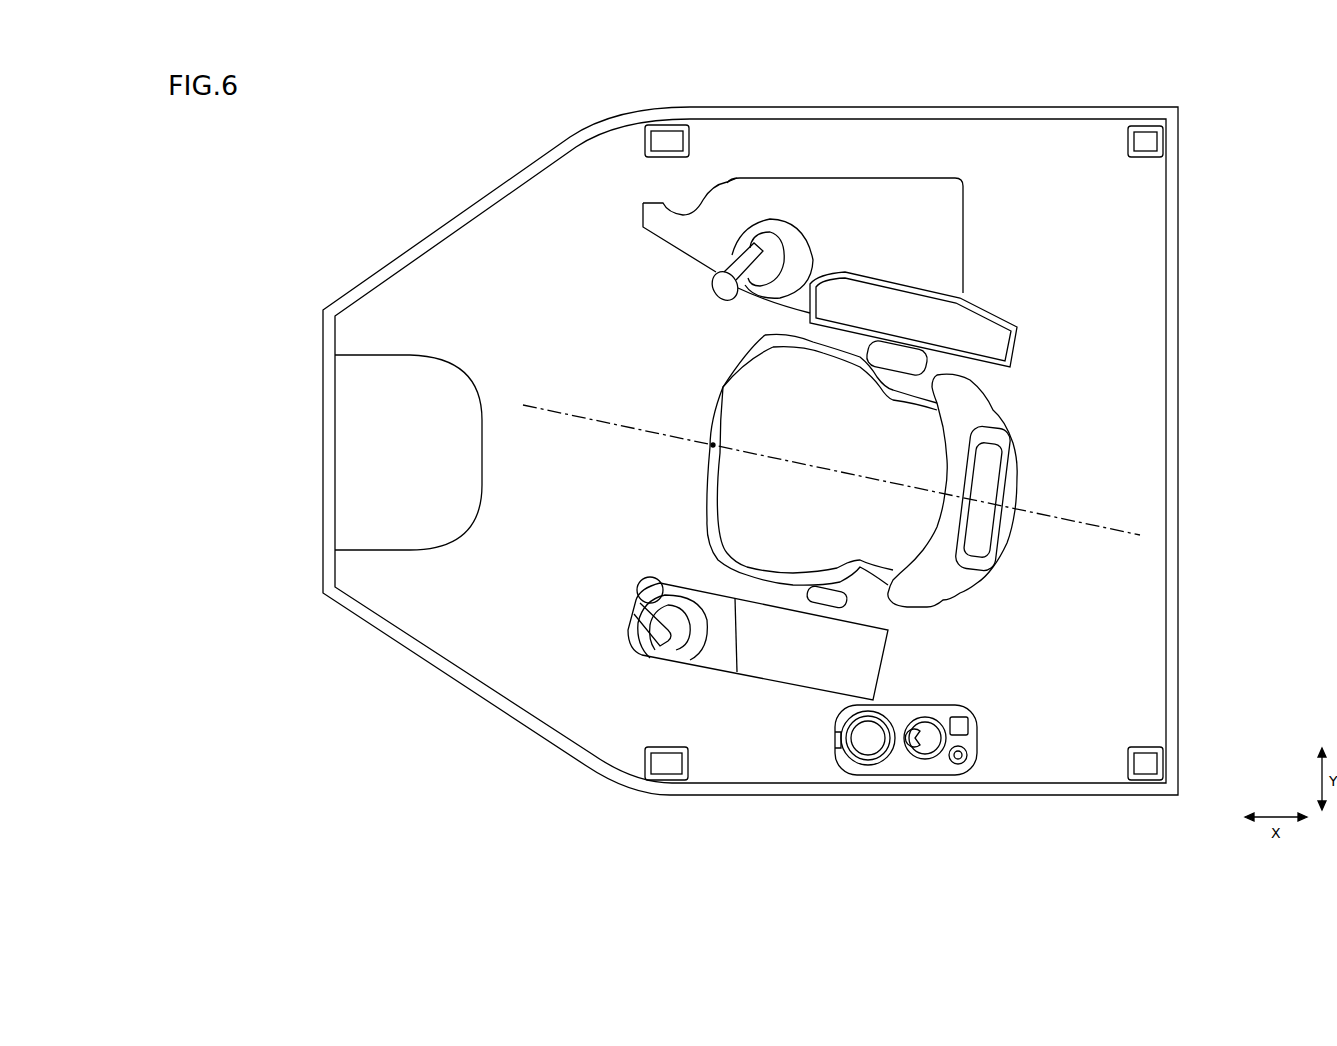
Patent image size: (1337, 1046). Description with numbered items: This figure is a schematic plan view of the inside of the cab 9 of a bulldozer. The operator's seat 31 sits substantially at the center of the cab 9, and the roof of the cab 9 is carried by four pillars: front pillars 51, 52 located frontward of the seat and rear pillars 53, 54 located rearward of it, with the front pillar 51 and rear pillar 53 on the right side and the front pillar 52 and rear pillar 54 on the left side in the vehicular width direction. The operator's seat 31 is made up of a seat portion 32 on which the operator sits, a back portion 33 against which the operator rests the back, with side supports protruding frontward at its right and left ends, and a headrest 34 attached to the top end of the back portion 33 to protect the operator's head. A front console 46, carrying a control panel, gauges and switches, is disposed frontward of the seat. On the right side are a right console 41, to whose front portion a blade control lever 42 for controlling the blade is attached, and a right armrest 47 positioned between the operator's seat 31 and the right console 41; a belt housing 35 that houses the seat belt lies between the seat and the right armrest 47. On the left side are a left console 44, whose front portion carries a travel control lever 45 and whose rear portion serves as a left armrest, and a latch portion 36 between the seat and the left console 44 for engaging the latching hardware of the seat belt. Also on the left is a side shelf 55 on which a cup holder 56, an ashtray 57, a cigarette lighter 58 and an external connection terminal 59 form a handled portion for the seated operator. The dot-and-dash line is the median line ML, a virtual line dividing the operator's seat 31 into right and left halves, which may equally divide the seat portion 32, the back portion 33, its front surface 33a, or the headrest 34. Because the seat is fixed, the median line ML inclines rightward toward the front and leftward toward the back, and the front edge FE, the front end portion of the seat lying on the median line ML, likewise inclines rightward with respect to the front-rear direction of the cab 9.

The cab 9 is at (423, 137).
The operator's seat 31 is at (748, 491).
The seat portion 32 is at (730, 528).
The back portion 33 is at (930, 585).
The front surface of the back portion 33a is at (940, 432).
The headrest 34 is at (993, 537).
The belt housing 35 is at (913, 362).
The latch portion 36 is at (847, 603).
The right console 41 is at (927, 200).
The blade control lever 42 is at (723, 275).
The left console 44 is at (780, 660).
The travel control lever 45 is at (653, 588).
The front console 46 is at (360, 452).
The right armrest 47 is at (977, 335).
The front pillar 51 is at (667, 140).
The front pillar 52 is at (665, 768).
The rear pillar 53 is at (1145, 140).
The rear pillar 54 is at (1145, 767).
The side shelf 55 is at (898, 765).
The cup holder 56 is at (865, 745).
The ashtray 57 is at (927, 747).
The cigarette lighter 58 is at (967, 728).
The external connection terminal 59 is at (958, 764).
The front edge FE is at (713, 445).
The median line ML is at (1087, 520).